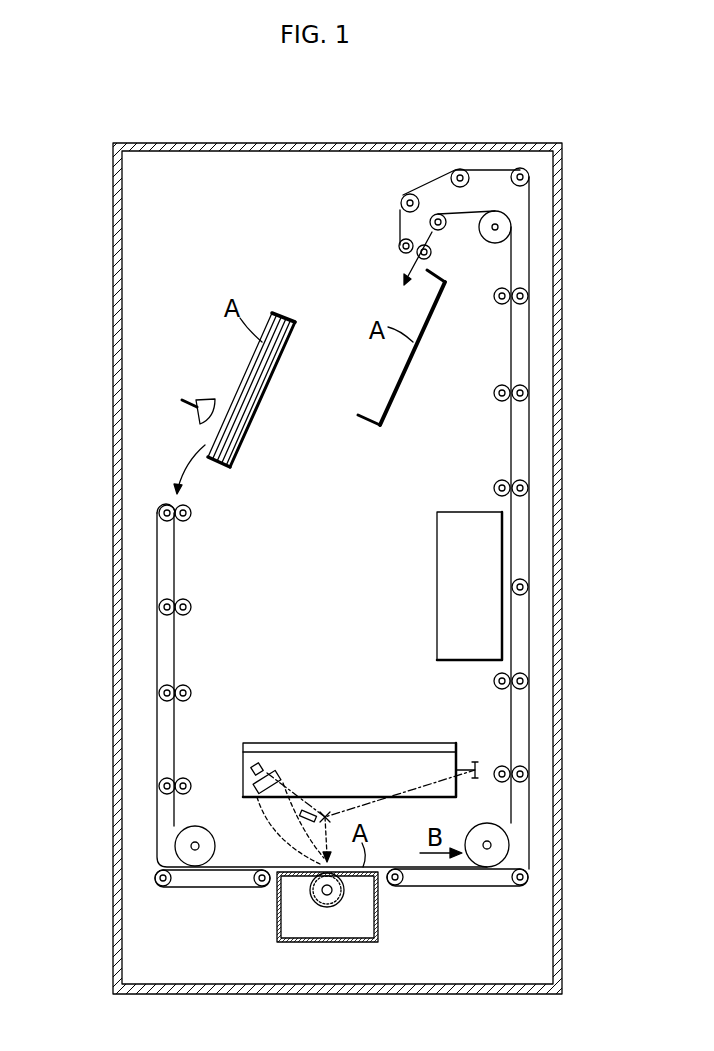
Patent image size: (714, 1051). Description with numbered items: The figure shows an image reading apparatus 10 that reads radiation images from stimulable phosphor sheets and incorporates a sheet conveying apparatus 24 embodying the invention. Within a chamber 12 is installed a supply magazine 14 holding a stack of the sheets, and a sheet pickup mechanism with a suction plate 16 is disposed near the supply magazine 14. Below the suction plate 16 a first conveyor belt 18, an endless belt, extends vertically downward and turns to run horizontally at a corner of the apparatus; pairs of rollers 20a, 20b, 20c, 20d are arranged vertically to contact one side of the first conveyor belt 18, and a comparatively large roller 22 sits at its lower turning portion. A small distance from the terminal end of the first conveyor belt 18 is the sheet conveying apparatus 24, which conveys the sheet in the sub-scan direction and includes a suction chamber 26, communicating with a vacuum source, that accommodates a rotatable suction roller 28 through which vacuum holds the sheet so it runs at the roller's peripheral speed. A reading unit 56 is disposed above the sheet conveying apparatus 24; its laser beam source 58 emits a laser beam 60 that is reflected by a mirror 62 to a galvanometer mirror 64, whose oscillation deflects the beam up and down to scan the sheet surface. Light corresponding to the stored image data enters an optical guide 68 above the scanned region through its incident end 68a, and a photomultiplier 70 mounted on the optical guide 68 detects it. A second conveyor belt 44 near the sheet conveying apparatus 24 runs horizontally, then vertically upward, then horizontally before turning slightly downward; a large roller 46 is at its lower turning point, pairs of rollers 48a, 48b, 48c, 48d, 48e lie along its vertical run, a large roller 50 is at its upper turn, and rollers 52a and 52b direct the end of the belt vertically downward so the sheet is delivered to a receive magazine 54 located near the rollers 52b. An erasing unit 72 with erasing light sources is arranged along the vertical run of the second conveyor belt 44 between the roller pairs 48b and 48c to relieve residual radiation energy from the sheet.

The image reading apparatus 10 is at (112, 364).
The chamber 12 is at (268, 207).
The supply magazine 14 is at (284, 316).
The suction plate 16 is at (190, 398).
The first conveyor belt 18 is at (155, 564).
The pair of rollers 20a is at (193, 513).
The pair of rollers 20b is at (192, 600).
The pair of rollers 20c is at (200, 690).
The pair of rollers 20d is at (190, 779).
The roller 22 is at (177, 843).
The sheet conveying apparatus 24 is at (268, 910).
The suction chamber 26 is at (380, 905).
The suction roller 28 is at (323, 907).
The second conveyor belt 44 is at (533, 633).
The roller 46 is at (507, 848).
The pair of rollers 48a is at (498, 782).
The pair of rollers 48b is at (493, 681).
The pair of rollers 48c is at (496, 482).
The pair of rollers 48d is at (497, 387).
The pair of rollers 48e is at (497, 295).
The roller 50 is at (507, 221).
The roller 52a is at (429, 224).
The roller 52b is at (399, 248).
The receive magazine 54 is at (365, 422).
The reading unit 56 is at (349, 768).
The laser beam source 58 is at (358, 784).
The laser beam 60 is at (428, 777).
The mirror 62 is at (477, 760).
The galvanometer mirror 64 is at (323, 812).
The optical guide 68 is at (268, 815).
The incident end 68a is at (320, 863).
The photomultiplier 70 is at (272, 762).
The erasing unit 72 is at (437, 547).